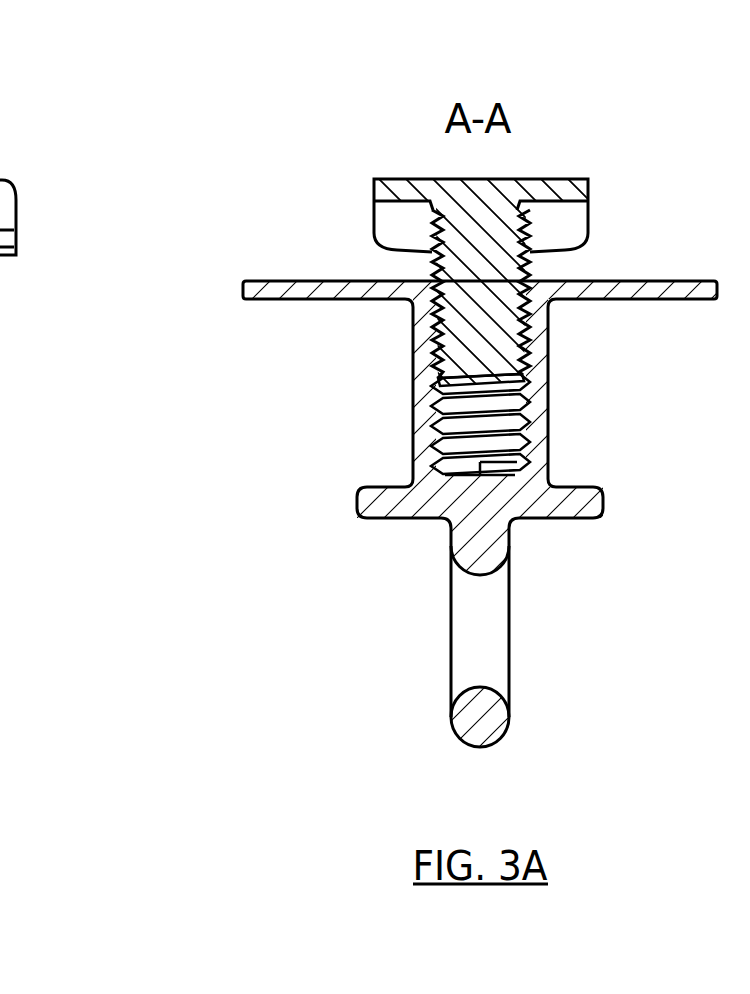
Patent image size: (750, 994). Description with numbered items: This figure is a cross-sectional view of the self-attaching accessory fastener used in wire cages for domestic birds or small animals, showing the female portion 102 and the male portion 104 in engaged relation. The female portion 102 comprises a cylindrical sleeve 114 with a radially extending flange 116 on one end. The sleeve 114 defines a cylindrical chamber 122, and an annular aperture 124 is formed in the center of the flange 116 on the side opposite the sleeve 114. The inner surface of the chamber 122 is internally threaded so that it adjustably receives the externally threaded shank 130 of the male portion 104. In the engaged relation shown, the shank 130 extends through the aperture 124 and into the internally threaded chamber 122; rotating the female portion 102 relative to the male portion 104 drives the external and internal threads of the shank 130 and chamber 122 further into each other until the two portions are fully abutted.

The female portion 102 is at (268, 650).
The male portion 104 is at (308, 118).
The cylindrical sleeve 114 is at (395, 412).
The flange 116 is at (223, 309).
The cylindrical chamber 122 is at (528, 418).
The annular aperture 124 is at (417, 265).
The externally threaded shank 130 is at (511, 335).